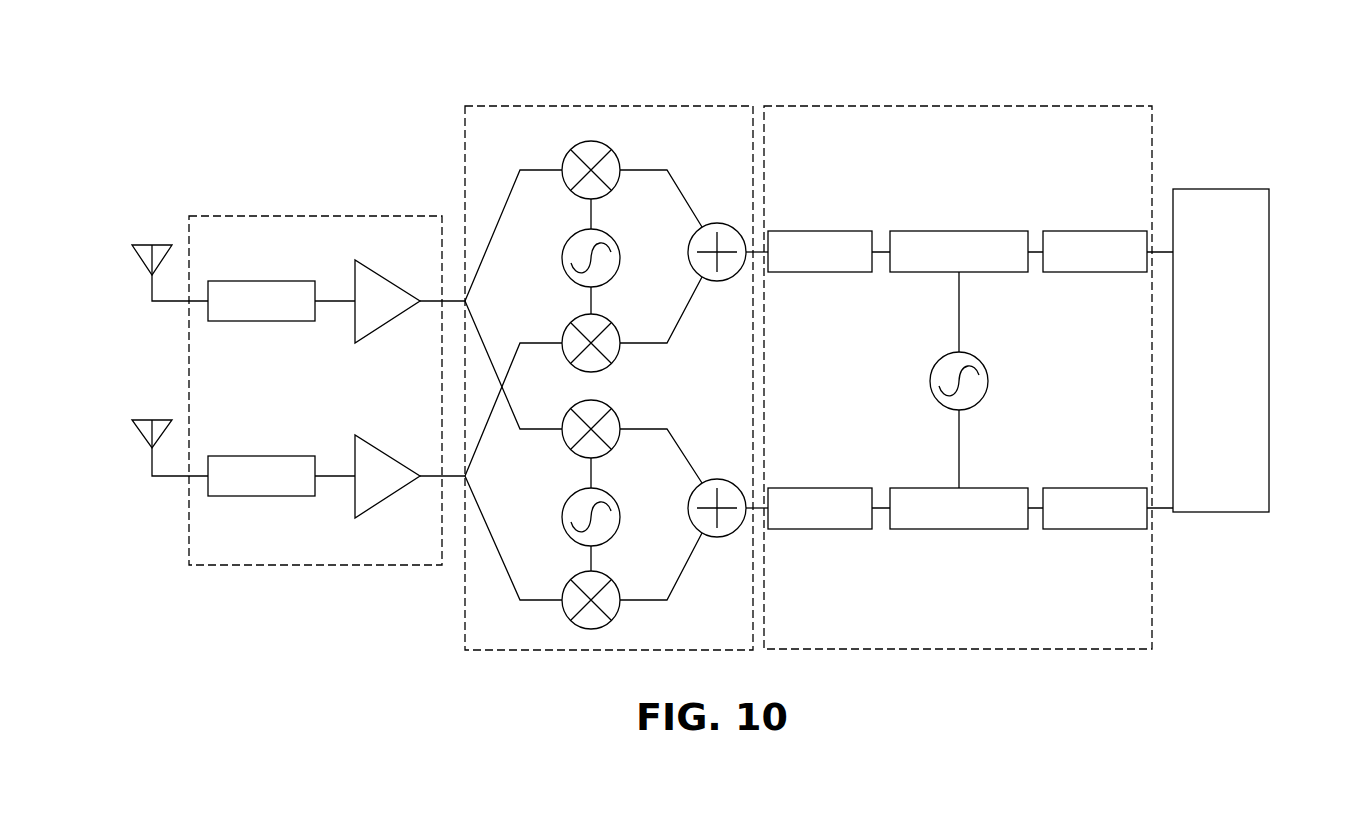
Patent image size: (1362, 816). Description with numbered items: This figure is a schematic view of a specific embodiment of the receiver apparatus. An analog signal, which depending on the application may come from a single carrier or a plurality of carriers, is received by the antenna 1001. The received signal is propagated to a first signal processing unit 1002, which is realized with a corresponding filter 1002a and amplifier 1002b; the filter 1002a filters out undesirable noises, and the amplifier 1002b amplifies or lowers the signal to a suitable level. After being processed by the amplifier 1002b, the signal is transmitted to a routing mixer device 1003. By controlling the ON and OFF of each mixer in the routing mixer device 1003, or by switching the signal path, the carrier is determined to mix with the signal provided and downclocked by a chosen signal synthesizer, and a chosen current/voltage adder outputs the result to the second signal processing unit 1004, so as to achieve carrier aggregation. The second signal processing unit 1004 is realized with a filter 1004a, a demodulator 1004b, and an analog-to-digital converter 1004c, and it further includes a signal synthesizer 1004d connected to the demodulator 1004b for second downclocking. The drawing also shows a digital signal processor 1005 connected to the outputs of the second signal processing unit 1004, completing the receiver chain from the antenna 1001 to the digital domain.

The antenna 1001 is at (142, 245).
The first signal processing unit 1002 is at (327, 349).
The filter 1002a is at (222, 281).
The amplifier 1002b is at (355, 330).
The routing mixer device 1003 is at (608, 106).
The second signal processing unit 1004 is at (968, 336).
The filter 1004a is at (797, 231).
The demodulator 1004b is at (952, 231).
The analog-to-digital converter (ADC) 1004c is at (1063, 231).
The signal synthesizer 1004d is at (985, 362).
The digital signal processor (DSP) 1005 is at (1222, 189).